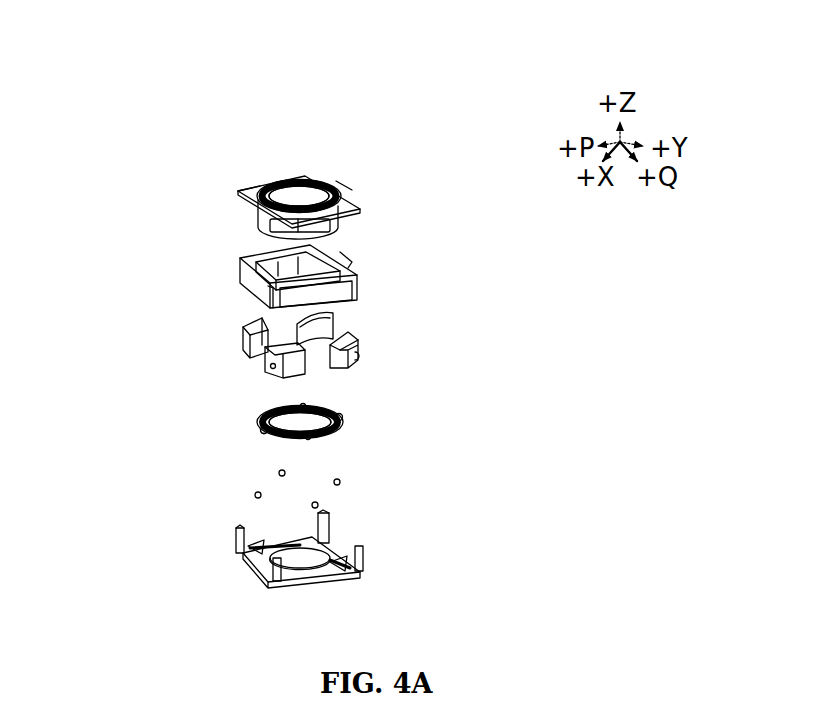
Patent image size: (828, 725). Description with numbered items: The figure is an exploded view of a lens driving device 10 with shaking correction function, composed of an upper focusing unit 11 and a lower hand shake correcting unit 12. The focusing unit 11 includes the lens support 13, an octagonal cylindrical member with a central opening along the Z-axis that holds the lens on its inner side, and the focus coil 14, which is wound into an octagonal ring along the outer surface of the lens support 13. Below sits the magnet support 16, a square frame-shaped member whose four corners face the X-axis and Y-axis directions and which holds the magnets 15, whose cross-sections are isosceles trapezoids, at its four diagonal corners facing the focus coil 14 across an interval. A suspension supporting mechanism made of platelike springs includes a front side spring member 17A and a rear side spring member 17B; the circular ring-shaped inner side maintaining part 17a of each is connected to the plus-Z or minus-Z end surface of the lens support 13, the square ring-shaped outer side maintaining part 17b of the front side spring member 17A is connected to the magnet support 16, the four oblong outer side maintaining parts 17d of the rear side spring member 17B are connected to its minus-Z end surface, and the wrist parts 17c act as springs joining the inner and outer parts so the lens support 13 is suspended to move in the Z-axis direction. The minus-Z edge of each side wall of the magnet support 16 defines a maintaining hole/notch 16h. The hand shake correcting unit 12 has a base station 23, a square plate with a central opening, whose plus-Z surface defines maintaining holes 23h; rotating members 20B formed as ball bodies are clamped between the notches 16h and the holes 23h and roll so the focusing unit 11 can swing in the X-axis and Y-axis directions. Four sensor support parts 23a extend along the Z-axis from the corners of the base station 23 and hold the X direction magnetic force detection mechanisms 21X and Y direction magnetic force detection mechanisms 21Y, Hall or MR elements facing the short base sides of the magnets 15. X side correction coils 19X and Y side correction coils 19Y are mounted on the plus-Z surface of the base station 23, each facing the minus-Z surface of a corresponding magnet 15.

The lens driving device 10 is at (118, 128).
The focusing unit 11 is at (146, 224).
The hand shake correcting unit 12 is at (472, 460).
The lens support 13 is at (282, 184).
The focus coil 14 is at (340, 213).
The magnet 15 is at (338, 327).
The magnet support 16 is at (256, 254).
The maintaining hole/notch 16h is at (260, 301).
The front side spring member 17A is at (357, 185).
The rear side spring member 17B is at (300, 436).
The inner side maintaining part 17a is at (299, 180).
The outer side maintaining part 17b is at (336, 182).
The wrist part 17c is at (248, 185).
The outer side maintaining part 17d is at (260, 424).
The X side correction coil 19X is at (340, 541).
The Y side correction coil 19Y is at (243, 559).
The rotating member 20B is at (341, 483).
The X direction magnetic force detection mechanism 21X is at (240, 330).
The Y direction magnetic force detection mechanism 21Y is at (272, 376).
The base station 23 is at (325, 576).
The sensor support part 23a is at (363, 559).
The maintaining hole 23h is at (309, 586).